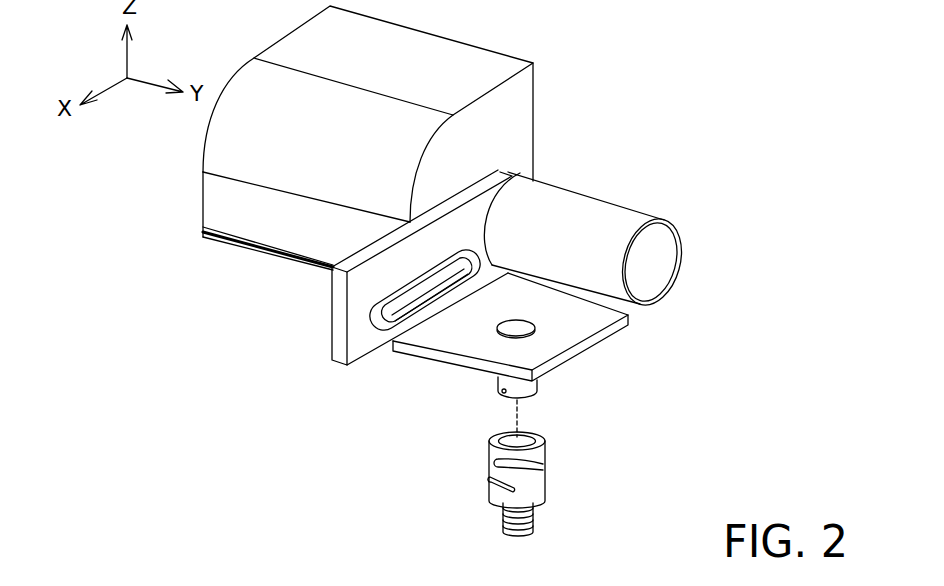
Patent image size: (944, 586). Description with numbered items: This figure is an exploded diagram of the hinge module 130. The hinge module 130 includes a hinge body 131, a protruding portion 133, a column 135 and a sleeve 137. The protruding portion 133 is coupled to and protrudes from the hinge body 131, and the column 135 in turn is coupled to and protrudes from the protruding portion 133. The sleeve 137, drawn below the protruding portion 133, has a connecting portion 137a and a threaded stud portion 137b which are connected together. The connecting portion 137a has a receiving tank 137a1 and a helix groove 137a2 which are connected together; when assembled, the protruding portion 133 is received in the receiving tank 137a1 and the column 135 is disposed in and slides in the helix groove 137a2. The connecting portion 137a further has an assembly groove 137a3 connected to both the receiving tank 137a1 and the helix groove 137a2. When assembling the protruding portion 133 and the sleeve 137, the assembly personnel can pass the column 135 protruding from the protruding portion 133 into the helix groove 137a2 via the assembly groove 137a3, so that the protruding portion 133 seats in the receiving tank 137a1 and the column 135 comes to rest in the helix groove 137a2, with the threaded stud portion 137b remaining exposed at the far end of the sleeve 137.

The hinge module 130 is at (858, 27).
The hinge body 131 is at (619, 183).
The protruding portion 133 is at (540, 400).
The column 135 is at (500, 393).
The sleeve 137 is at (651, 480).
The connecting portion 137a is at (538, 480).
The receiving tank 137a1 is at (534, 429).
The helix groove 137a2 is at (478, 483).
The assembly groove 137a3 is at (504, 436).
The threaded stud portion 137b is at (538, 512).